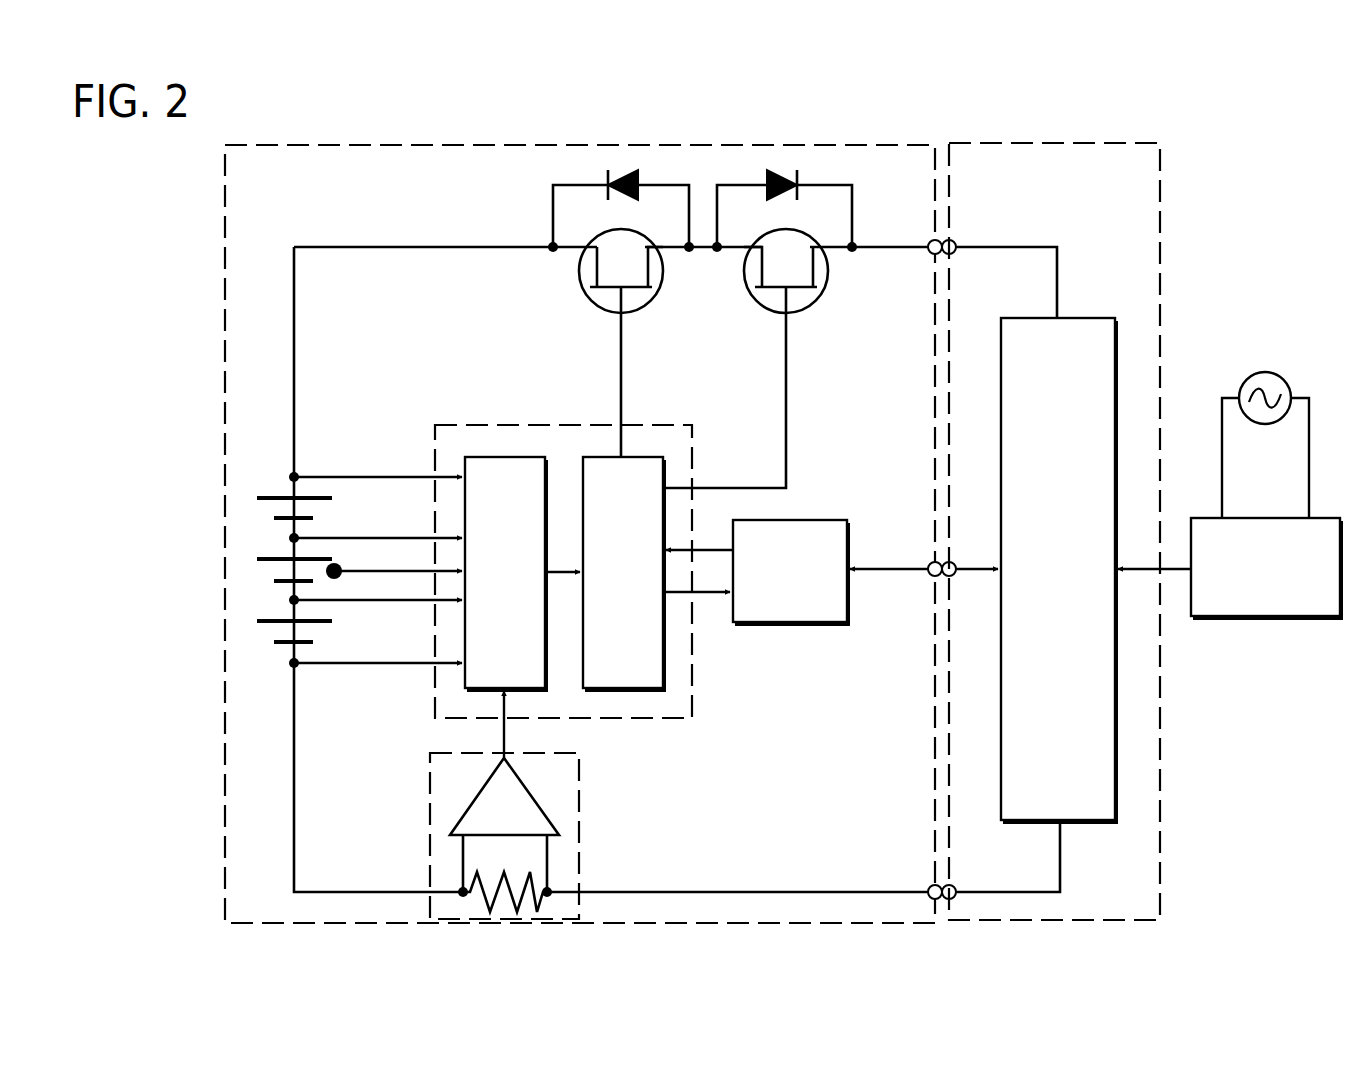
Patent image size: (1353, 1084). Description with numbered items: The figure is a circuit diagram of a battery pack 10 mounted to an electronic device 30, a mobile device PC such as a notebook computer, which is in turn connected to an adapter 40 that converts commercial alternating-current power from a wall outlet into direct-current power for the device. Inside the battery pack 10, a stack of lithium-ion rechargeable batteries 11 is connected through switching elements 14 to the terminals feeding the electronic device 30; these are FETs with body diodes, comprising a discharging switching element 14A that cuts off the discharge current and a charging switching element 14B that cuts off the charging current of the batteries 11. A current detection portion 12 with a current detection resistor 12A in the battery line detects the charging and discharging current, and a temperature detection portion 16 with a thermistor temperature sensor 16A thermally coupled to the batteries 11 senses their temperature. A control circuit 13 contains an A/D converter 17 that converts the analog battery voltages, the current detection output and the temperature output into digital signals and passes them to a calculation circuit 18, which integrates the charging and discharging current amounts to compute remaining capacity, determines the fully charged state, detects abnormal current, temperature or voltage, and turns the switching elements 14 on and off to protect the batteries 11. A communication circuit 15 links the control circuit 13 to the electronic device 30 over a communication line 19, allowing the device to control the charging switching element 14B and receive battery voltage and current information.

The battery pack 10 is at (437, 144).
The rechargeable batteries 11 is at (278, 495).
The current detection portion 12 is at (580, 836).
The current detection resistor 12A is at (535, 905).
The control circuit 13 is at (612, 557).
The switching elements 14 is at (702, 300).
The discharging switching element 14A is at (684, 302).
The charging switching element 14B is at (784, 274).
The communication circuit 15 is at (818, 624).
The temperature detection portion 16 is at (394, 670).
The temperature sensor 16A is at (336, 582).
The A/D converter 17 is at (483, 457).
The calculation circuit 18 is at (603, 457).
The communication line 19 is at (905, 568).
The electronic device 30 is at (1130, 143).
The adapter 40 is at (1260, 618).